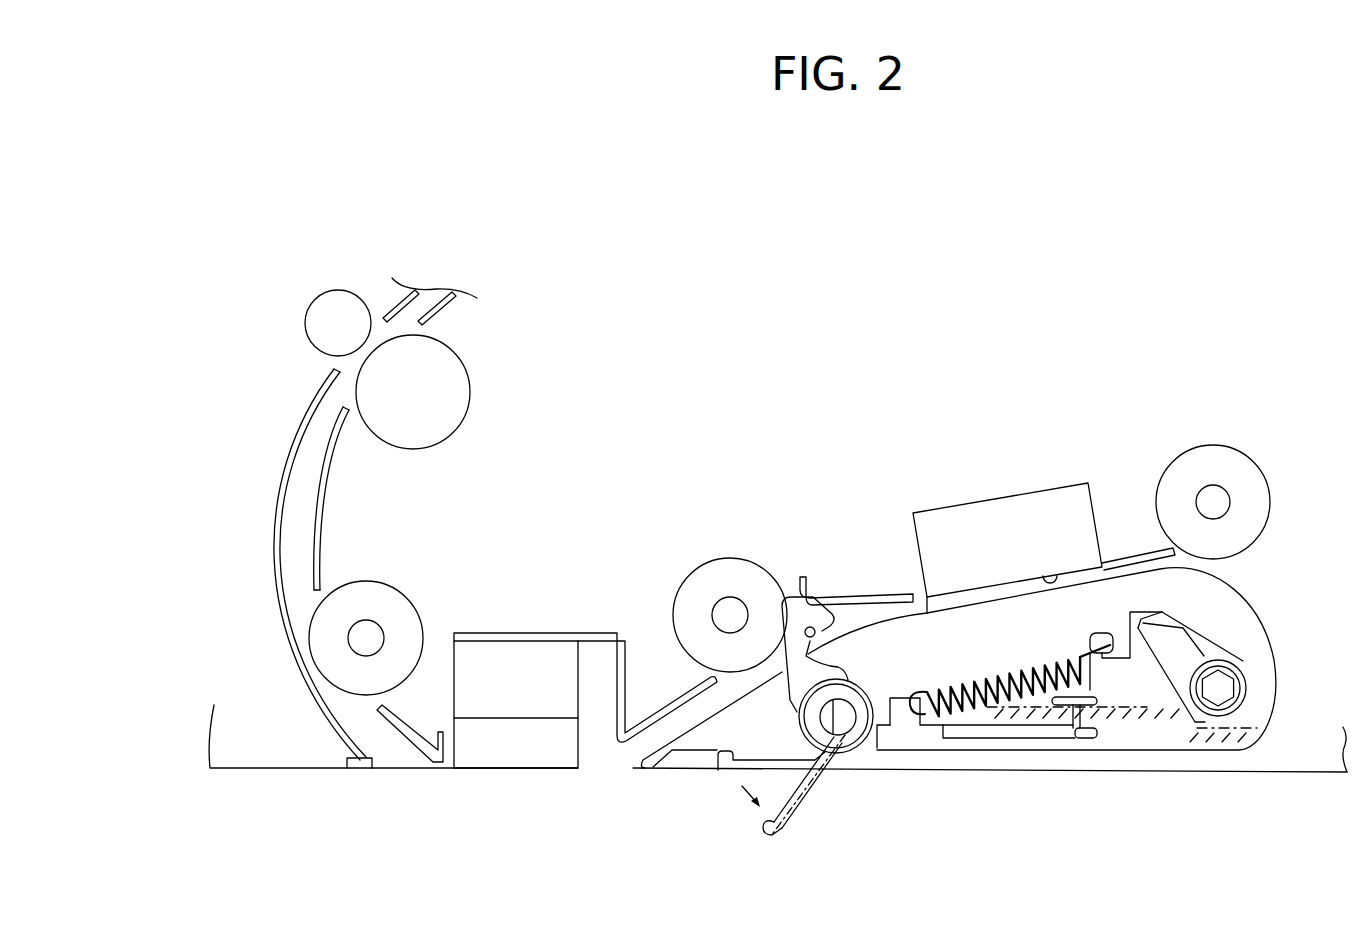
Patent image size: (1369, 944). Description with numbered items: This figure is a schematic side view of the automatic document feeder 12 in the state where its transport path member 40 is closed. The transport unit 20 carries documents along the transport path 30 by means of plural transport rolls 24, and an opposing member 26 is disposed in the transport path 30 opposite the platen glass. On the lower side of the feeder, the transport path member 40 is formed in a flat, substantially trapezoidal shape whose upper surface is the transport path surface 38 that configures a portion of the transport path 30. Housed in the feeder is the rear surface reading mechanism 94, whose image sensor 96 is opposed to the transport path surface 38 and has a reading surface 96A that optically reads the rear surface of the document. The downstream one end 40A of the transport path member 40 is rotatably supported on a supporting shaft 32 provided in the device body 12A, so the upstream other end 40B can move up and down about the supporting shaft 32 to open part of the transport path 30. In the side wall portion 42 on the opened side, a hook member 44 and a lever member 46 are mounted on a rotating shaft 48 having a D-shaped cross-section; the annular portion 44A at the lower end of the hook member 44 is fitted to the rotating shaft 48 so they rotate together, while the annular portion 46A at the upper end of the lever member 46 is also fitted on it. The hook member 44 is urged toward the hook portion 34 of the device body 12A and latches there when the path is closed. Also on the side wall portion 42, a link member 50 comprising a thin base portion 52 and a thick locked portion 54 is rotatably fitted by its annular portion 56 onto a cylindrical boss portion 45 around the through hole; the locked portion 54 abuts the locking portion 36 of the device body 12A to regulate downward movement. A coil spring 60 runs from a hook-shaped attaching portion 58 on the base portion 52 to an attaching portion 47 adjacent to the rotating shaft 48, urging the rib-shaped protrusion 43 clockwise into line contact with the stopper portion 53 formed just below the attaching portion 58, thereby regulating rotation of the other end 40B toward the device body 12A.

The automatic document feeder 12 is at (1208, 182).
The device body 12A is at (258, 780).
The transport unit 20 is at (355, 262).
The transport rolls 24 is at (305, 316).
The opposing member 26 is at (512, 660).
The transport path 30 is at (298, 455).
The supporting shaft 32 is at (1228, 689).
The hook portion 34 is at (818, 598).
The locking portion 36 is at (1184, 692).
The transport path surface 38 is at (896, 600).
The transport path member 40 is at (1270, 638).
The one end 40A is at (1275, 718).
The other end 40B is at (682, 742).
The side wall portion 42 is at (968, 636).
The protrusion 43 is at (1070, 716).
The hook member 44 is at (790, 598).
The annular portion 44A is at (854, 682).
The cylindrical boss portion 45 is at (1246, 664).
The lever member 46 is at (722, 772).
The annular portion 46A is at (852, 762).
The attaching portion 47 is at (906, 736).
The rotating shaft 48 is at (848, 737).
The link member 50 is at (1270, 632).
The base portion 52 is at (1143, 690).
The stopper portion 53 is at (1110, 695).
The locked portion 54 is at (1232, 615).
The annular portion 56 is at (1236, 722).
The attaching portion 58 is at (1103, 626).
The coil spring 60 is at (1010, 690).
The rear surface reading mechanism 94 is at (988, 492).
The image sensor 96 is at (1073, 496).
The reading surface 96A is at (1048, 575).